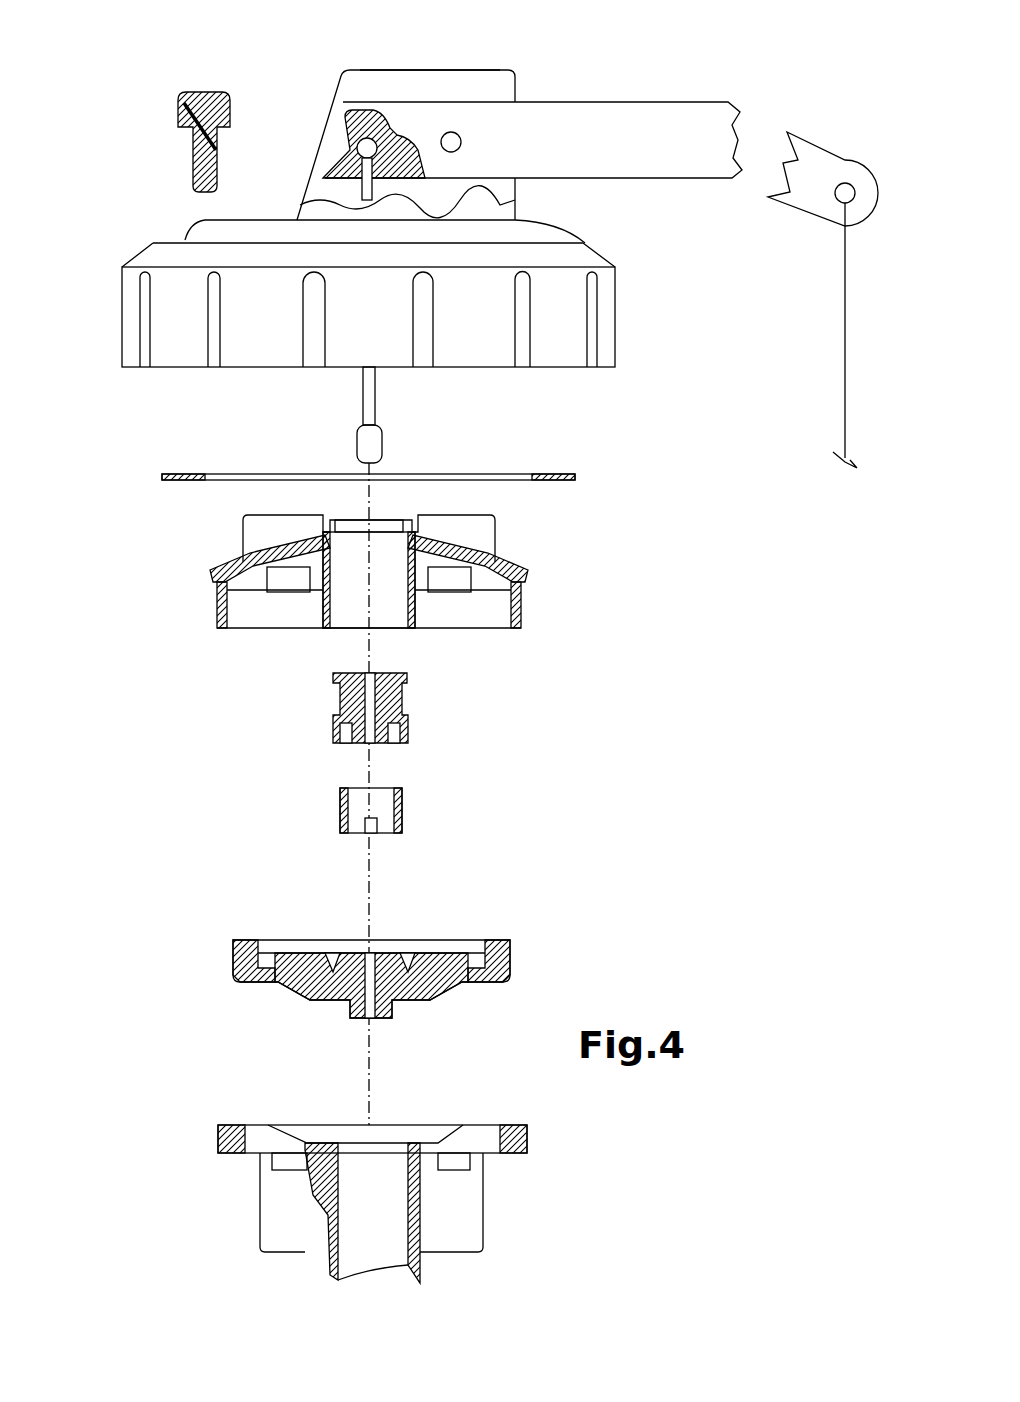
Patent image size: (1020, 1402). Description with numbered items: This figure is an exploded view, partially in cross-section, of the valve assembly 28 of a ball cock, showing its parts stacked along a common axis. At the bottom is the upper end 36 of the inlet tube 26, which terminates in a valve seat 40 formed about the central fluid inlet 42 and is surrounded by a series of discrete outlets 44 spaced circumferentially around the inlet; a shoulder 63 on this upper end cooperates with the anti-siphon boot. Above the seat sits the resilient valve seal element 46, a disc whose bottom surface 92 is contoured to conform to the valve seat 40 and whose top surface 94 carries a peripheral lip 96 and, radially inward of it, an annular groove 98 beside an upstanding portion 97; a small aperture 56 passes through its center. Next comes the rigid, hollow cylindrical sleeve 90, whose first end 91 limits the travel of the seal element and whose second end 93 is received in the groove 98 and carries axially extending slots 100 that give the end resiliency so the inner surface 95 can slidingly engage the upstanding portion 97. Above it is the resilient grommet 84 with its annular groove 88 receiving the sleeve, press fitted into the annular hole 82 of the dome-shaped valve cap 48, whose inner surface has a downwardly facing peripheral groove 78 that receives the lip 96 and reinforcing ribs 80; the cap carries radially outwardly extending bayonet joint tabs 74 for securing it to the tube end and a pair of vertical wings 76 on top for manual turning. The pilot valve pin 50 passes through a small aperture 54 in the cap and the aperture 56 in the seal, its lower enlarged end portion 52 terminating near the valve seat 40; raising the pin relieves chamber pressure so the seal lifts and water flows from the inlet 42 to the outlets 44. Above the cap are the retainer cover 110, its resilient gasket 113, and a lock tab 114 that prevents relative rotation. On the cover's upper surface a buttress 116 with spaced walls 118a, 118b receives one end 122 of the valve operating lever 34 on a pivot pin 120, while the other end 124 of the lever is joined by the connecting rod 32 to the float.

The inlet tube 26 is at (420, 1225).
The valve assembly 28 is at (660, 568).
The connecting rod 32 is at (848, 360).
The valve operating lever 34 is at (542, 125).
The upper end of the inlet tube 36 is at (390, 1209).
The valve seat 40 is at (315, 1143).
The fluid inlet 42 is at (398, 1252).
The outlets 44 is at (287, 1162).
The resilient valve seal element 46 is at (372, 972).
The valve cap 48 is at (343, 598).
The pilot valve pin 50 is at (375, 390).
The enlarged end portion 52 is at (358, 445).
The aperture in the valve cap 54 is at (376, 742).
The aperture in the valve seal element 56 is at (380, 955).
The shoulder 63 is at (502, 1152).
The bayonet joint tabs 74 is at (213, 572).
The vertical wings 76 is at (258, 525).
The peripheral groove 78 is at (498, 610).
The reinforcing ribs 80 is at (292, 582).
The annular hole 82 is at (340, 560).
The grommet 84 is at (365, 718).
The annular groove of the grommet 88 is at (346, 738).
The sleeve 90 is at (393, 828).
The first end of the sleeve 91 is at (400, 790).
The bottom surface 92 is at (425, 1002).
The second end of the sleeve 93 is at (380, 833).
The top surface 94 is at (328, 960).
The inner surface of the sleeve 95 is at (350, 798).
The peripheral lip 96 is at (492, 945).
The upstanding portion 97 is at (336, 966).
The annular groove of the seal element 98 is at (410, 960).
The slots 100 is at (372, 838).
The retainer cover 110 is at (615, 283).
The gasket 113 is at (162, 478).
The lock tab 114 is at (193, 165).
The buttress 116 is at (316, 140).
The upwardly extending wall 118a is at (310, 212).
The upwardly extending wall 118b is at (475, 80).
The pivot pin 120 is at (367, 143).
The end of the valve operating lever 122 is at (402, 112).
The other end of the valve operating lever 124 is at (875, 178).